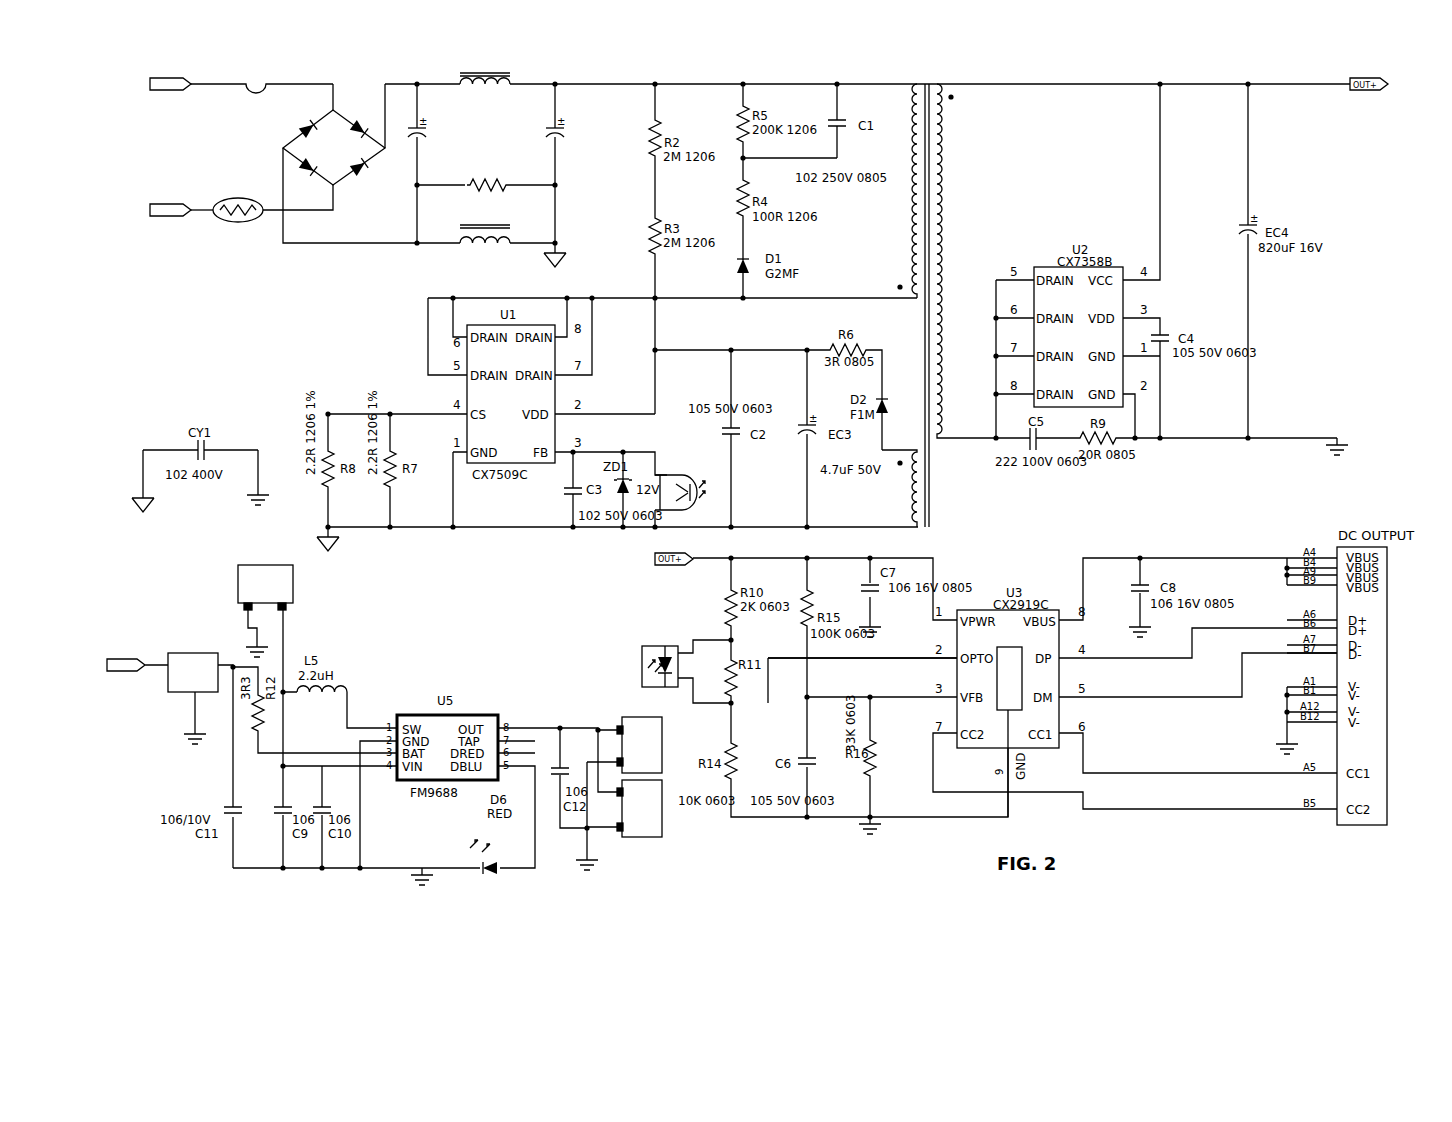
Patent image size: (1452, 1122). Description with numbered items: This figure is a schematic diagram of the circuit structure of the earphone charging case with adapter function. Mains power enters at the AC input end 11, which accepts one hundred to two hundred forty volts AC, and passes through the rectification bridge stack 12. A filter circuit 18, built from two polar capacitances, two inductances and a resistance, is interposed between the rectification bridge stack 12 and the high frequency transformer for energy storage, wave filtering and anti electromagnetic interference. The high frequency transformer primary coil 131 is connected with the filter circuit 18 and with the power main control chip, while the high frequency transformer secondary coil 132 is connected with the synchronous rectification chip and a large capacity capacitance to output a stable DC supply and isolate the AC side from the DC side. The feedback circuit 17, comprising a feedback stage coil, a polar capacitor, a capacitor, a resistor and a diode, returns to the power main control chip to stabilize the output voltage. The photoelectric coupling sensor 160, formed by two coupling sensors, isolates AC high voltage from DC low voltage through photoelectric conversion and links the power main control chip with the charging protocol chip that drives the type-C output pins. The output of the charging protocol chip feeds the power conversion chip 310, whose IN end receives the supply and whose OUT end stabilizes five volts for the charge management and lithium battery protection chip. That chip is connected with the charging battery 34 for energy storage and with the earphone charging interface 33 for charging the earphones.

The AC input end 11 is at (236, 158).
The rectification bridge stack 12 is at (337, 130).
The filter circuit 18 is at (502, 110).
The high frequency transformer primary coil 131 is at (917, 158).
The high frequency transformer secondary coil 132 is at (938, 157).
The feedback circuit 17 is at (875, 493).
The photoelectric coupling sensor 160 is at (637, 658).
The charging battery 34 is at (282, 573).
The power conversion chip 310 is at (177, 687).
The earphone charging interface 33 is at (648, 798).